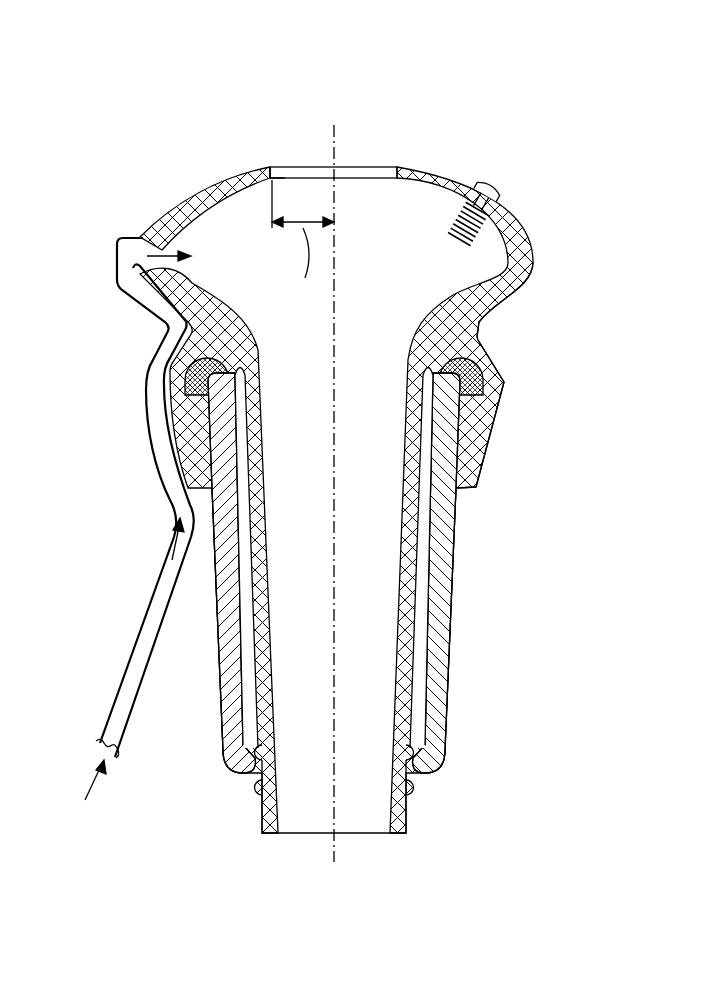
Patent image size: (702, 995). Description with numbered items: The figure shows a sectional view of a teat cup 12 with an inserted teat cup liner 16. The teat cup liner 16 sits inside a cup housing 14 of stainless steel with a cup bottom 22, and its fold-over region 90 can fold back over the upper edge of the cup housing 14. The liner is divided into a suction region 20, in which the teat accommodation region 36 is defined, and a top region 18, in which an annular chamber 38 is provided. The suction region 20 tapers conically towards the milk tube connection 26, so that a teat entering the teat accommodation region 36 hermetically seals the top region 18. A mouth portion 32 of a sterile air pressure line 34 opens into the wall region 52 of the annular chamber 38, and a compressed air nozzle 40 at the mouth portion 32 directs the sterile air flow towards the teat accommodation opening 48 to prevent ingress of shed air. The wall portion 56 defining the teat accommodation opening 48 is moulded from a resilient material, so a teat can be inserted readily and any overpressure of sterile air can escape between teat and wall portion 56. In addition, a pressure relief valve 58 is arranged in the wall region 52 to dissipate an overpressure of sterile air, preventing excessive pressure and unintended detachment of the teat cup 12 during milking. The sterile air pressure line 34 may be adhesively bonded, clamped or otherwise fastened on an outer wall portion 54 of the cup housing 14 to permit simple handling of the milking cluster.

The teat cup 12 is at (598, 198).
The cup housing 14 is at (458, 608).
The teat cup liner 16 is at (433, 174).
The top region 18 is at (497, 290).
The suction region 20 is at (405, 677).
The cup bottom 22 is at (440, 753).
The milk tube connection 26 is at (404, 820).
The mouth portion 32 is at (137, 253).
The sterile air pressure line 34 is at (159, 577).
The teat accommodation region 36 is at (382, 457).
The annular chamber 38 is at (486, 253).
The compressed air nozzle 40 is at (155, 238).
The teat accommodation opening 48 is at (372, 167).
The wall region 52 is at (523, 260).
The outer wall portion 54 is at (447, 562).
The wall portion 56 is at (268, 166).
The pressure relief valve 58 is at (487, 180).
The fold-over region 90 is at (475, 458).